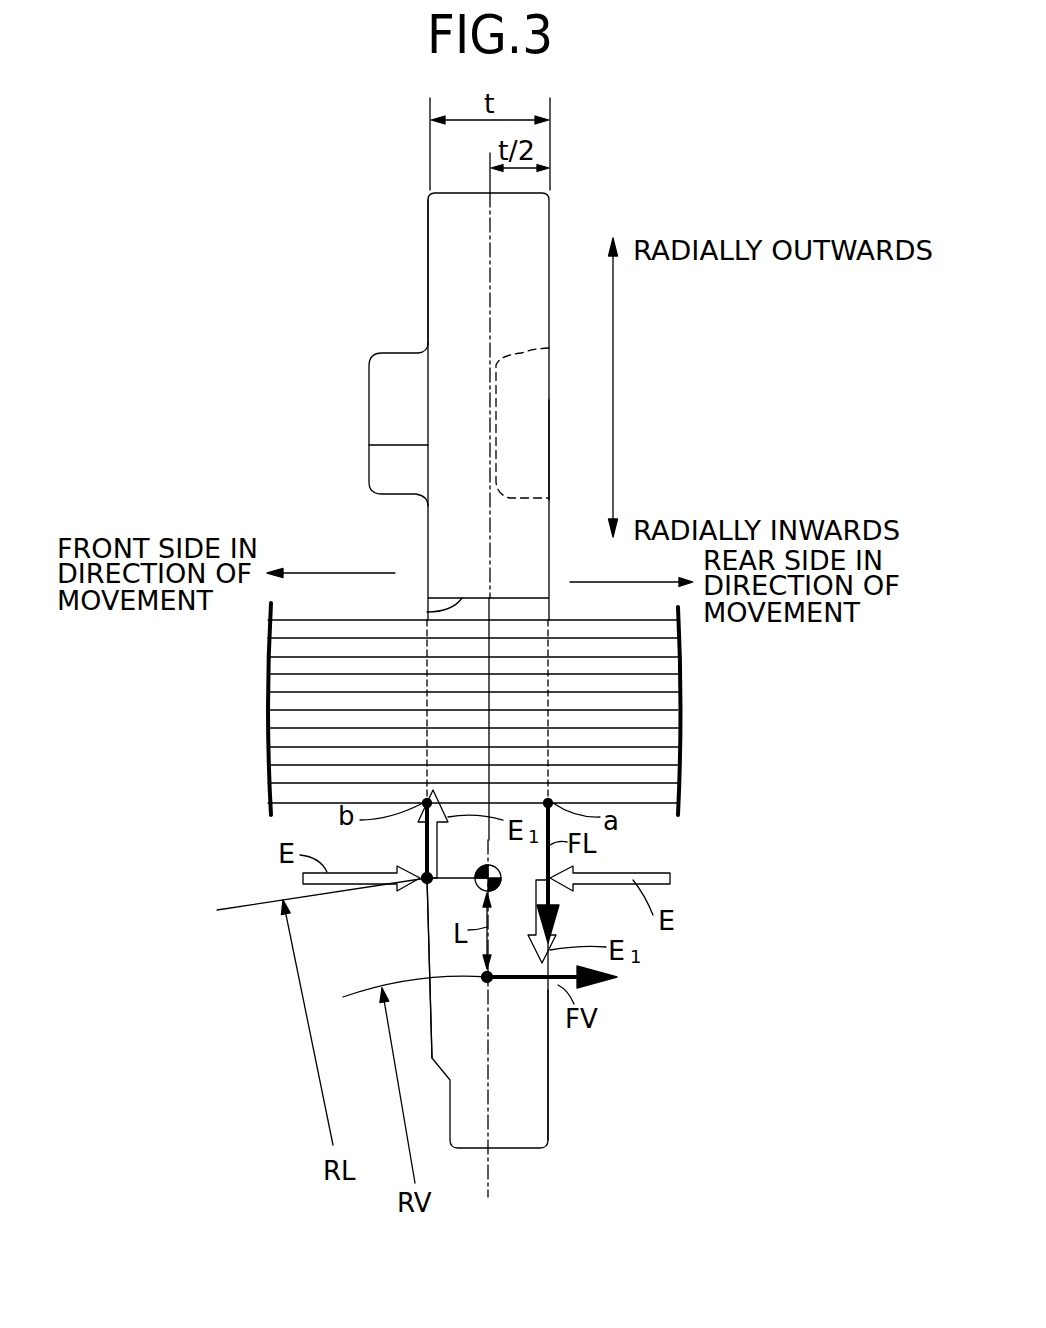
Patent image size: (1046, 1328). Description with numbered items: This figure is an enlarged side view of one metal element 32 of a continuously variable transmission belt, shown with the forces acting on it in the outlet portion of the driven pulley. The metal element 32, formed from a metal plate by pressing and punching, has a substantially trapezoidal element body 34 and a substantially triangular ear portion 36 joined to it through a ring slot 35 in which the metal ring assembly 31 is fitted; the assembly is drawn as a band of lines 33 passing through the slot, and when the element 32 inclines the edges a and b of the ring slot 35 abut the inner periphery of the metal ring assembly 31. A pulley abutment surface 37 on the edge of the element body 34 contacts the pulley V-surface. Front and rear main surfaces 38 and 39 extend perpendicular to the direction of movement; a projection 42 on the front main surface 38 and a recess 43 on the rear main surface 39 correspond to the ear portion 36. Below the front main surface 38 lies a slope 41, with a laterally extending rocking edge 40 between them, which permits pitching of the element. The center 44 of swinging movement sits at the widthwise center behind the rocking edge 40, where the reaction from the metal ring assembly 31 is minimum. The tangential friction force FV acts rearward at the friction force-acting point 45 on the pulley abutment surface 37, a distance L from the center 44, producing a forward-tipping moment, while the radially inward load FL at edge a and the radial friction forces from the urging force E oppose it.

The metal ring assembly 31 is at (300, 810).
The metal element 32 is at (400, 303).
The grooves 33 is at (663, 667).
The element body 34 is at (549, 1102).
The ring slot 35 is at (427, 613).
The ear portion 36 is at (428, 327).
The pulley abutment surface 37 is at (522, 1048).
The front main surface 38 is at (383, 445).
The rear main surface 39 is at (550, 432).
The rocking edge 40 is at (420, 872).
The slope 41 is at (427, 938).
The projection 42 is at (369, 392).
The recess 43 is at (522, 354).
The center of swinging movement 44 is at (477, 869).
The friction force-acting point 45 is at (482, 981).